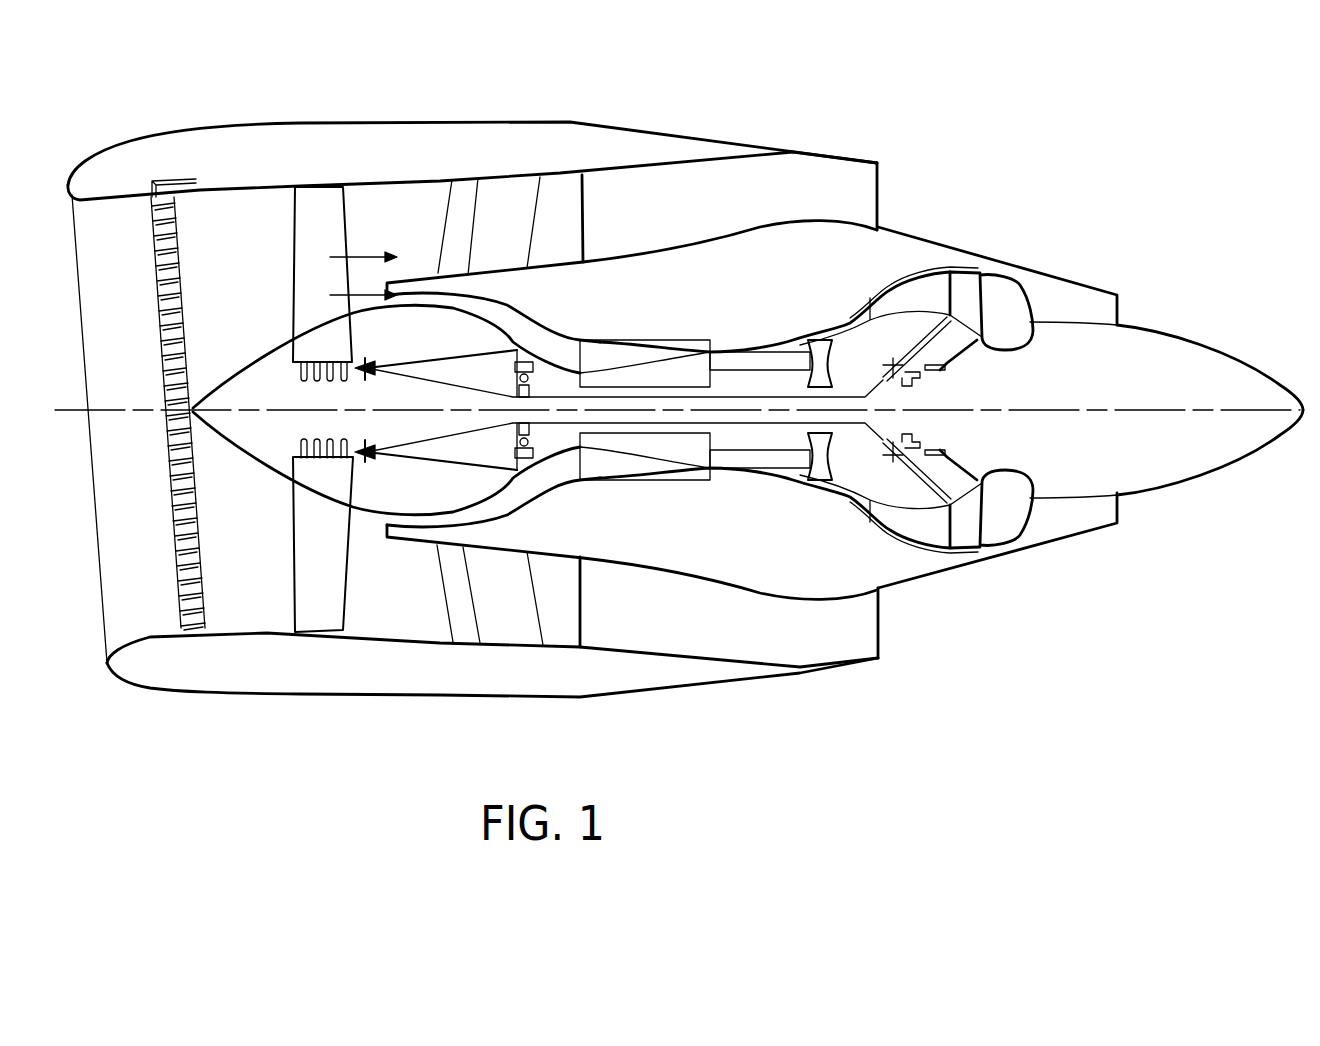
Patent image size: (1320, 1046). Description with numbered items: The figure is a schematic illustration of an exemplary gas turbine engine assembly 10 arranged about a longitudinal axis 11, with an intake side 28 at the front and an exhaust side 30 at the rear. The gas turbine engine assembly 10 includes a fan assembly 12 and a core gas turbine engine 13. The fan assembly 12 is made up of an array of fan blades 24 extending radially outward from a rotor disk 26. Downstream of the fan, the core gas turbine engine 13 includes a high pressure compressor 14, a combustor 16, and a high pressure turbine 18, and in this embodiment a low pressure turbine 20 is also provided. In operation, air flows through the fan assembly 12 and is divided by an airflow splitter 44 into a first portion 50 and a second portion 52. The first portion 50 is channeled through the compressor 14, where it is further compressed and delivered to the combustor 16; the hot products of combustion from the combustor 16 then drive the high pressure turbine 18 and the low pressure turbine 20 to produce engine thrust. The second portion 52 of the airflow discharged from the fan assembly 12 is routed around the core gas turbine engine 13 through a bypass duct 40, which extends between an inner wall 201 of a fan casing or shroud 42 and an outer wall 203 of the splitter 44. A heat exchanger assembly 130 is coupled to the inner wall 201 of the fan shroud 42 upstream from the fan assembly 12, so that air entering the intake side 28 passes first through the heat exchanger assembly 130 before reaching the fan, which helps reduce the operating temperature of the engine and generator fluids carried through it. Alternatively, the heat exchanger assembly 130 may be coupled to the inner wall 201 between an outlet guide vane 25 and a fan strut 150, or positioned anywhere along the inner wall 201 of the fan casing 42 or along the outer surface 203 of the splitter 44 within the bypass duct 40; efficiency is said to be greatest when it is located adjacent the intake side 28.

The gas turbine engine assembly 10 is at (1063, 158).
The longitudinal axis 11 is at (138, 411).
The fan assembly 12 is at (328, 556).
The core gas turbine engine 13 is at (1005, 257).
The high pressure compressor 14 is at (593, 352).
The combustor 16 is at (780, 345).
The high pressure turbine 18 is at (820, 487).
The low pressure turbine 20 is at (912, 292).
The fan blades 24 is at (320, 243).
The outlet guide vane 25 is at (463, 185).
The rotor disk 26 is at (312, 470).
The intake side 28 is at (100, 610).
The exhaust side 30 is at (915, 182).
The bypass duct 40 is at (683, 237).
The fan casing or shroud 42 is at (573, 121).
The airflow splitter 44 is at (760, 227).
The first portion of the airflow 50 is at (367, 293).
The second portion of the airflow 52 is at (367, 247).
The heat exchanger assembly 130 is at (157, 290).
The fan strut 150 is at (560, 203).
The inner wall 201 is at (80, 203).
The outer wall 203 is at (925, 245).